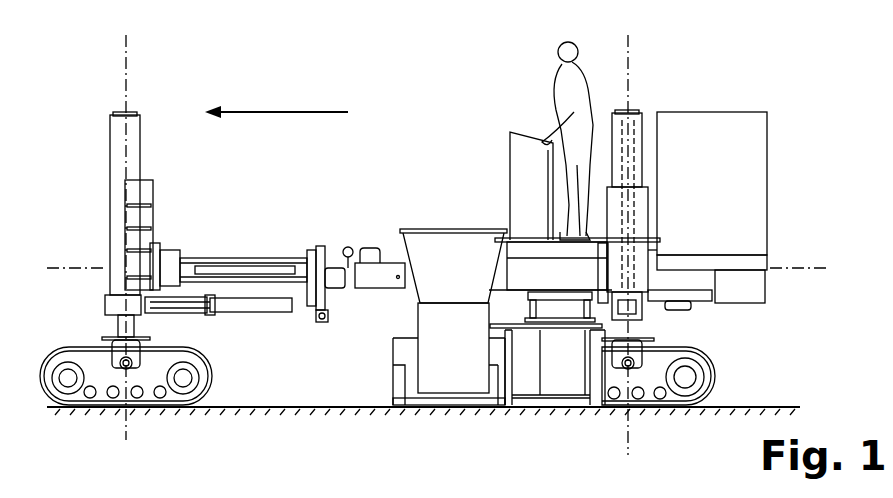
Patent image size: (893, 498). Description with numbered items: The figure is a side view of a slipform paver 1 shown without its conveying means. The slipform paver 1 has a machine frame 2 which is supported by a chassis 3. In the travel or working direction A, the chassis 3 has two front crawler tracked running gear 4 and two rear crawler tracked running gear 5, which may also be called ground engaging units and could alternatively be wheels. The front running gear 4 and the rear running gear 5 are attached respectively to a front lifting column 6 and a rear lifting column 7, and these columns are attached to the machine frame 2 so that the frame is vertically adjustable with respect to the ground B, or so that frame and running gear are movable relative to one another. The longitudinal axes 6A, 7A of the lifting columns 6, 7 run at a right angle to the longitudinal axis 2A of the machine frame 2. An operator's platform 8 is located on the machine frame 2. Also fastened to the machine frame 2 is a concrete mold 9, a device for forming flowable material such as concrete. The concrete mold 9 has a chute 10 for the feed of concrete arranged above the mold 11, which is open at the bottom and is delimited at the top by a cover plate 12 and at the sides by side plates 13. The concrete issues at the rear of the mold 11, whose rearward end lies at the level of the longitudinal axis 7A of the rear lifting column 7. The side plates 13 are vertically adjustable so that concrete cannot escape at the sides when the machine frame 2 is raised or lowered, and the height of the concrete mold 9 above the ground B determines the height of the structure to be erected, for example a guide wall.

The slipform paver 1 is at (402, 124).
The machine frame 2 is at (392, 254).
The longitudinal axis of the machine frame 2A is at (818, 267).
The chassis 3 is at (137, 340).
The front crawler tracked running gear 4 is at (213, 377).
The rear crawler tracked running gear 5 is at (717, 377).
The front lifting column 6 is at (110, 163).
The longitudinal axis of the front lifting column 6A is at (126, 82).
The rear lifting column 7 is at (640, 148).
The longitudinal axis of the rear lifting column 7A is at (628, 54).
The operator's platform 8 is at (523, 122).
The concrete mold 9 is at (453, 269).
The chute 10 is at (433, 240).
The mold 11 is at (563, 394).
The cover plate 12 is at (502, 340).
The side plates 13 is at (528, 378).
The travel or working direction A is at (283, 111).
The ground B is at (325, 410).